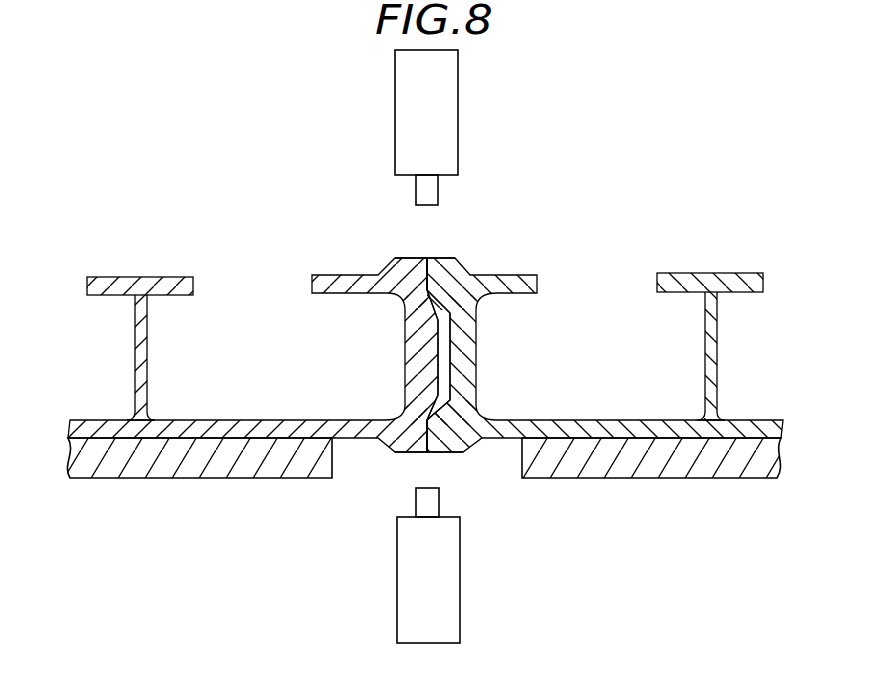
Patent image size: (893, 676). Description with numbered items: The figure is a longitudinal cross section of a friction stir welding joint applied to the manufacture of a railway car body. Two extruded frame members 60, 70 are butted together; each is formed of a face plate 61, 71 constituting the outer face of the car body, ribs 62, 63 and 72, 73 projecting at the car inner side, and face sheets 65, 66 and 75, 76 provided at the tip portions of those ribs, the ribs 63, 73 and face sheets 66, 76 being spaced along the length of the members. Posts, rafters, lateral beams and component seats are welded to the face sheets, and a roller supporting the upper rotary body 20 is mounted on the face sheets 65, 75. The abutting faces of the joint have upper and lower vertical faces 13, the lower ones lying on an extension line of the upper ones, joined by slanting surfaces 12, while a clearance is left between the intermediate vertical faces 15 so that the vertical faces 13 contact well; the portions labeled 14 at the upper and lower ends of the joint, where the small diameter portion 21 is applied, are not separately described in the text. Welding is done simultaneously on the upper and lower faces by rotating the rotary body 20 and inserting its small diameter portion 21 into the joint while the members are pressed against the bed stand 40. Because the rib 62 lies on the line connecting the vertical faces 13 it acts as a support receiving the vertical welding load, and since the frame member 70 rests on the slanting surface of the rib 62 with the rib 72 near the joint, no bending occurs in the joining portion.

The slanting surfaces 12 is at (476, 313).
The vertical faces 13 is at (470, 273).
The electrode contact portion 14 is at (400, 257).
The vertical faces 15 is at (437, 380).
The rotary body 20 is at (458, 108).
The small diameter portion 21 is at (438, 185).
The bed stand 40 is at (163, 478).
The extruded frame member 60 is at (92, 422).
The face plate 61 is at (253, 420).
The rib 62 is at (405, 340).
The rib 63 is at (135, 363).
The face sheet 65 is at (327, 275).
The face sheet 66 is at (148, 277).
The extruded frame member 70 is at (753, 418).
The face plate 71 is at (625, 418).
The rib 72 is at (477, 388).
The rib 73 is at (717, 333).
The face sheet 75 is at (520, 272).
The face sheet 76 is at (717, 273).